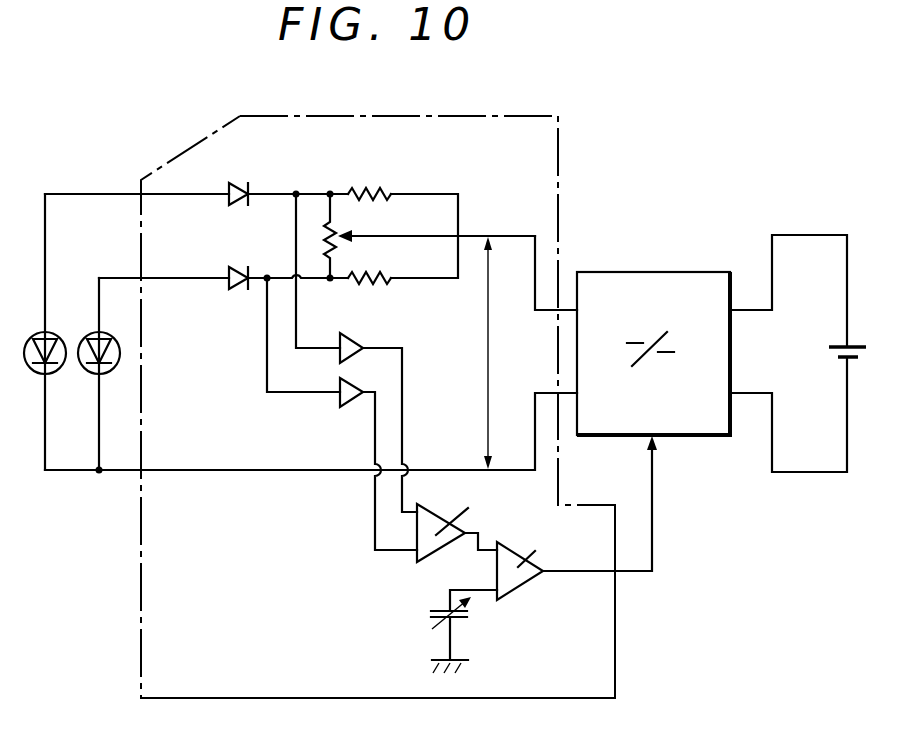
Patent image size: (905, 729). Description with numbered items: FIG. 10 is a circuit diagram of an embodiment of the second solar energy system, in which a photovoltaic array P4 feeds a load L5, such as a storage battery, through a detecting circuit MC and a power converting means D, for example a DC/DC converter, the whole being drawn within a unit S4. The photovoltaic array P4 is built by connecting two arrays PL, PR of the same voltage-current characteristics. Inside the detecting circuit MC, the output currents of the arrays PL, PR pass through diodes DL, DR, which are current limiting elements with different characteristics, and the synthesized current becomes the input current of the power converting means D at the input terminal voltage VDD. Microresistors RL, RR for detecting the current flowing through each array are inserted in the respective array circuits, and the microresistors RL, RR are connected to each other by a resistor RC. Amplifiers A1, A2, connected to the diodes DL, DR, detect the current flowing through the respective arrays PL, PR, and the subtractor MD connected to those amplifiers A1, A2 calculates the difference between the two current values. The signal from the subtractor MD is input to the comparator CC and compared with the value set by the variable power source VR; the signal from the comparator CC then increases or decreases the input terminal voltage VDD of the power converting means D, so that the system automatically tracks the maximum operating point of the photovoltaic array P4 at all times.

The sensor unit S4 is at (599, 199).
The detecting circuit MC is at (620, 653).
The photovoltaic array P4 is at (80, 332).
The array PL is at (53, 332).
The array PR is at (90, 332).
The diode DL is at (241, 184).
The diode DR is at (245, 270).
The microresistor RL is at (377, 188).
The microresistor RR is at (376, 290).
The resistor RC is at (338, 246).
The input terminal voltage VDD is at (497, 353).
The amplifier A1 is at (349, 335).
The amplifier A2 is at (350, 408).
The subtractor MD is at (446, 522).
The comparator CC is at (523, 565).
The variable power source VR is at (436, 611).
The power converting means D is at (660, 283).
The battery / power source L5 is at (840, 343).